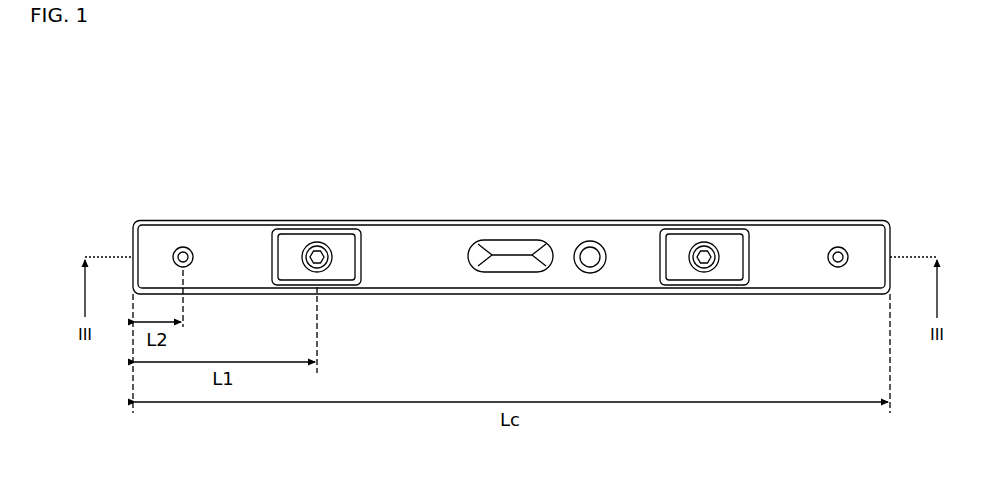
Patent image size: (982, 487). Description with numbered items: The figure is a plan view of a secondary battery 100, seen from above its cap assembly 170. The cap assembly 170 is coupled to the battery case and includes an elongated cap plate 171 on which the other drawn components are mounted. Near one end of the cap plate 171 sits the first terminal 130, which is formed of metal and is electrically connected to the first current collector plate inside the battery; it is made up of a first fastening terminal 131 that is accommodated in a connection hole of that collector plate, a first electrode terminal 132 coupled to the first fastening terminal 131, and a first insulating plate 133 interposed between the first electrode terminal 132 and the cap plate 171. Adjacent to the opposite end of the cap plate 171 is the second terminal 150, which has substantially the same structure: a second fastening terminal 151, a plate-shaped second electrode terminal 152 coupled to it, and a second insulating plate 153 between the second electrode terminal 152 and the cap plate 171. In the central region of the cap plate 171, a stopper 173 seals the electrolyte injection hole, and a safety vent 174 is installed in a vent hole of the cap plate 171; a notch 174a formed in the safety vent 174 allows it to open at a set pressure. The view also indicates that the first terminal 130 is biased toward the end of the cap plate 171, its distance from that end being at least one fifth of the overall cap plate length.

The secondary battery 100 is at (82, 117).
The first terminal 130 is at (317, 200).
The first fastening terminal 131 is at (317, 262).
The first electrode terminal 132 is at (292, 239).
The first insulating plate 133 is at (362, 244).
The second terminal 150 is at (704, 200).
The second fastening terminal 151 is at (703, 262).
The second electrode terminal 152 is at (680, 240).
The second insulating plate 153 is at (748, 244).
The cap assembly 170 is at (525, 195).
The cap plate 171 is at (433, 240).
The stopper 173 is at (594, 215).
The safety vent 174 is at (493, 246).
The notch 174a is at (530, 240).